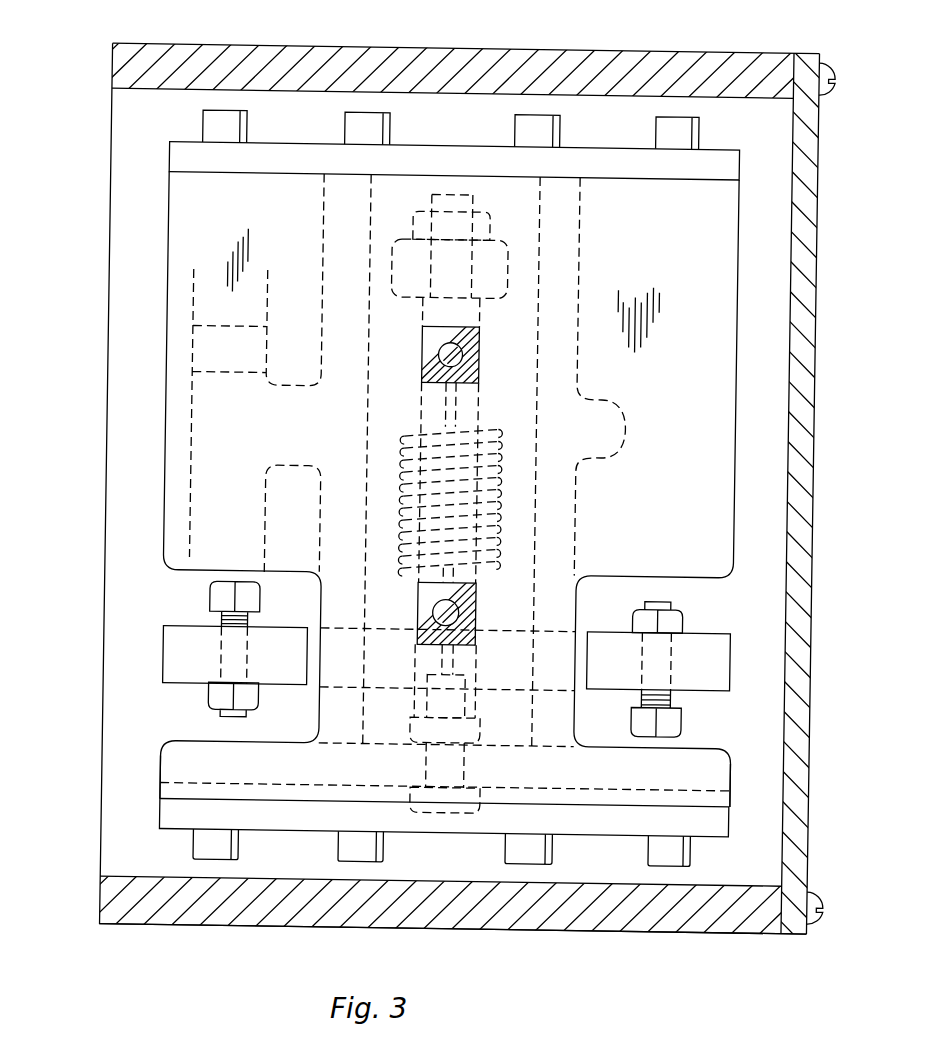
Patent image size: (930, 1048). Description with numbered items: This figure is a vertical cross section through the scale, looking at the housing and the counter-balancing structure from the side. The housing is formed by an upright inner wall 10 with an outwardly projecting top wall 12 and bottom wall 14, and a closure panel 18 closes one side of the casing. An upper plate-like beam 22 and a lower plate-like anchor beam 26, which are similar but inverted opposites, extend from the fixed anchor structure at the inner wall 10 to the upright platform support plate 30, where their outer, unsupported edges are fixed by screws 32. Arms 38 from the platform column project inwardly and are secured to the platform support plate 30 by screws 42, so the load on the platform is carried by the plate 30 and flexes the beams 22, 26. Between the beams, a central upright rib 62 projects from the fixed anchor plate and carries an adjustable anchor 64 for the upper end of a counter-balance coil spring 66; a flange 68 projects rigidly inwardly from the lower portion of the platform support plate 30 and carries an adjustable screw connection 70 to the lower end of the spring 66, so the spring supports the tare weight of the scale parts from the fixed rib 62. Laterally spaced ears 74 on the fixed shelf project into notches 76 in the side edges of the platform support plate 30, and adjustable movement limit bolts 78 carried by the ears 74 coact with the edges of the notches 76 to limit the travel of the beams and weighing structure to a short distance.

The upright inner wall 10 is at (127, 447).
The top wall 12 is at (233, 51).
The bottom wall 14 is at (196, 922).
The closure panel 18 is at (799, 497).
The upper plate-like beam 22 is at (426, 165).
The lower plate-like anchor beam 26 is at (462, 820).
The upright platform support plate 30 is at (175, 394).
The screws 32 is at (344, 140).
The arms 38 is at (419, 381).
The screws 42 is at (458, 348).
The central upright rib 62 is at (504, 260).
The adjustable anchor 64 is at (486, 236).
The counter-balance coil spring 66 is at (492, 487).
The flange 68 is at (638, 788).
The adjustable screw connection 70 is at (465, 782).
The ears 74 is at (170, 669).
The notches 76 is at (203, 746).
The adjustable movement limit bolts 78 is at (216, 619).